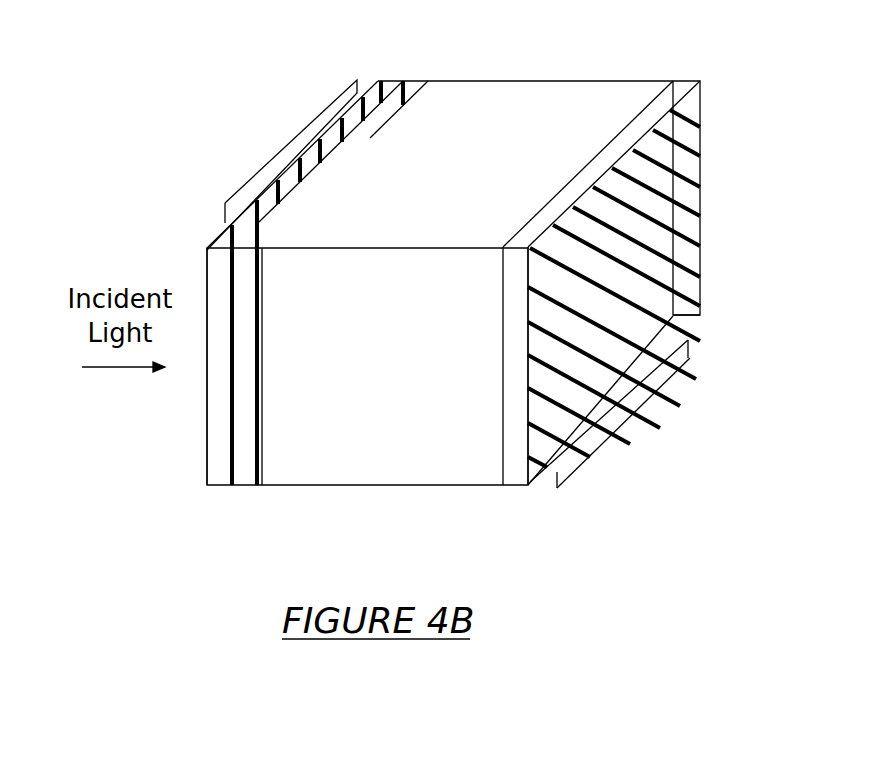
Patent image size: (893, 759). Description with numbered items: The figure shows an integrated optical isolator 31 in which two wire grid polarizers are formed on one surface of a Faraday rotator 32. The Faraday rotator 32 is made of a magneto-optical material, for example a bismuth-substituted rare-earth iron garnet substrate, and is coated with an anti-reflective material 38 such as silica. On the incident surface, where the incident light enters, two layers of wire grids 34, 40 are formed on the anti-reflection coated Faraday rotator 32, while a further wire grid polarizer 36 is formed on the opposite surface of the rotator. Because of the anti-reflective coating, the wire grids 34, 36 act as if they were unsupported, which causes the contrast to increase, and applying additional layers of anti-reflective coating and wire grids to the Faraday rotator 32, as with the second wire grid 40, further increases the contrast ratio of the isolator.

The integrated optical isolator 31 is at (543, 78).
The Faraday rotator 32 is at (385, 472).
The wire grid polarizer 34 is at (377, 80).
The wire grid polarizer 36 is at (630, 417).
The anti-reflective material 38 is at (256, 464).
The wire grid 40 is at (279, 150).